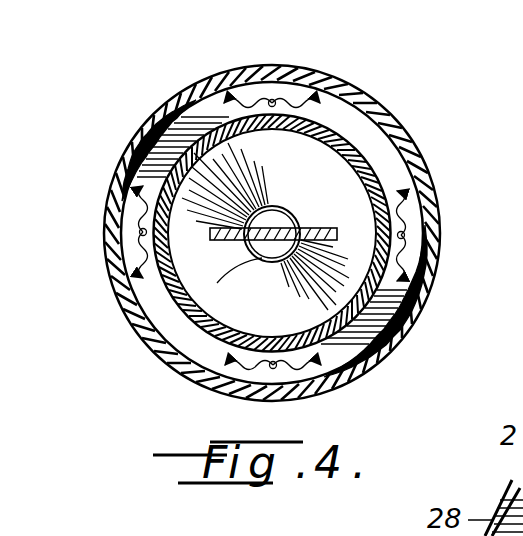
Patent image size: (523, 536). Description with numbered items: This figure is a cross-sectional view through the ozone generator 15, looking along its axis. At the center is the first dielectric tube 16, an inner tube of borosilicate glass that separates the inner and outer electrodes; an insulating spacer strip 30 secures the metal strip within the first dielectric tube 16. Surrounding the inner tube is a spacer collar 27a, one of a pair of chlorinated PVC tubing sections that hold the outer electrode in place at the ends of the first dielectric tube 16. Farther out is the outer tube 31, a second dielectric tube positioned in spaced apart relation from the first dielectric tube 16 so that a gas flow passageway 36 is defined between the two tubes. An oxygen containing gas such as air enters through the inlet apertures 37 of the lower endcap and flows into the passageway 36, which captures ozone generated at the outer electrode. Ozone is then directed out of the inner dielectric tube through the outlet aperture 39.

The ozone generator 15 is at (158, 84).
The first dielectric tube 16 is at (279, 207).
The spacer collar 27a is at (348, 140).
The insulating spacer strip 30 is at (312, 228).
The outer tube 31 is at (417, 151).
The gas flow passageway 36 is at (401, 287).
The inlet apertures 37 is at (273, 99).
The outlet aperture 39 is at (273, 264).